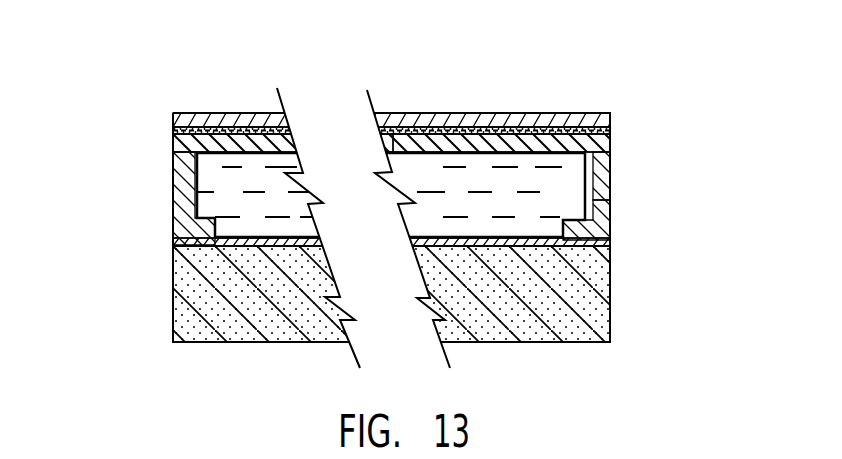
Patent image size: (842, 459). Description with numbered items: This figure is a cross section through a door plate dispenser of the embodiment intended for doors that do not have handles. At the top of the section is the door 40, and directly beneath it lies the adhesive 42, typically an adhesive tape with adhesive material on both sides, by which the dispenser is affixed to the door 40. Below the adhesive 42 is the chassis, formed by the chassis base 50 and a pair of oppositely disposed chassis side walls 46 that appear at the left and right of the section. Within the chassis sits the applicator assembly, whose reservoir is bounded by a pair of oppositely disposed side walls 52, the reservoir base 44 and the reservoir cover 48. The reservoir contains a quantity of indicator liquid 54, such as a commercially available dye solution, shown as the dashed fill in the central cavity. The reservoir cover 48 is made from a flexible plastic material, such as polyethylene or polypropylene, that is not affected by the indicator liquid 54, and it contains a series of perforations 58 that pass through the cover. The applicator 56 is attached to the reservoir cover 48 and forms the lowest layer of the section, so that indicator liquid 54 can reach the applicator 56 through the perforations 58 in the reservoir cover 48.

The door 40 is at (482, 127).
The adhesive 42 is at (603, 130).
The reservoir base 44 is at (532, 140).
The chassis side walls 46 is at (177, 184).
The reservoir cover 48 is at (553, 250).
The chassis base 50 is at (217, 138).
The side walls 52 is at (603, 153).
The indicator liquid 54 is at (603, 193).
The applicator 56 is at (263, 318).
The perforations 58 is at (257, 246).